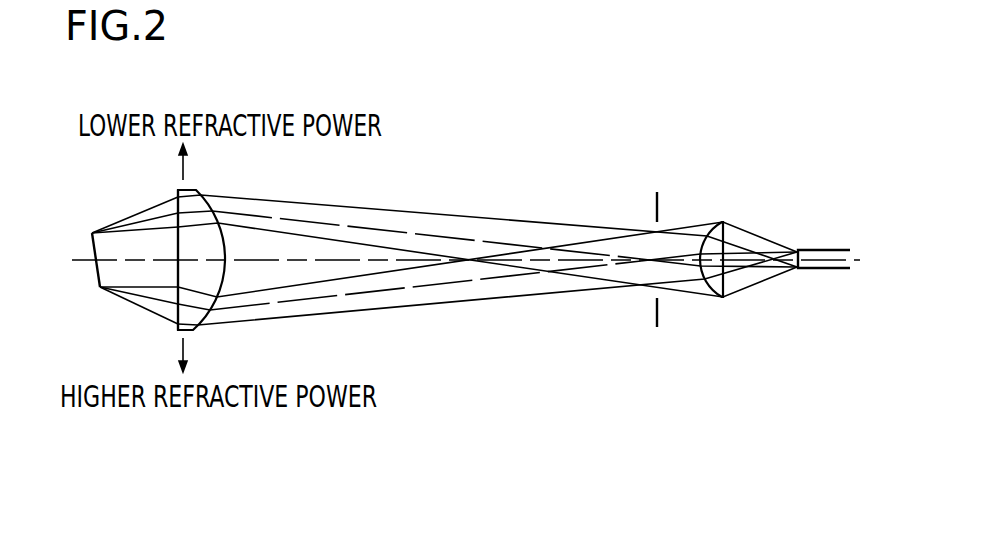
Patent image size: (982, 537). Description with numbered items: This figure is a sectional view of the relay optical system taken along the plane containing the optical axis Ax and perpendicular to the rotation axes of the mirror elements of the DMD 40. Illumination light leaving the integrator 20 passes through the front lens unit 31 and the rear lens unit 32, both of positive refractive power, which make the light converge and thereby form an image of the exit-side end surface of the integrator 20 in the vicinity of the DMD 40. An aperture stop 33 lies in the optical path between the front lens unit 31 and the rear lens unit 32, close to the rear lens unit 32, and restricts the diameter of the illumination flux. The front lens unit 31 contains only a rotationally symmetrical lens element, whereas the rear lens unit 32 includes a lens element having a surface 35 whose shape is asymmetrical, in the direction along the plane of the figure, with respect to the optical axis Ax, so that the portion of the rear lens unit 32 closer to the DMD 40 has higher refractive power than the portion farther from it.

The integrator 20 is at (827, 268).
The front lens unit 31 is at (717, 285).
The rear lens unit 32 is at (197, 315).
The aperture stop 33 is at (656, 312).
The surface 35 is at (177, 287).
The DMD 40 is at (95, 270).
The optical axis Ax is at (372, 262).